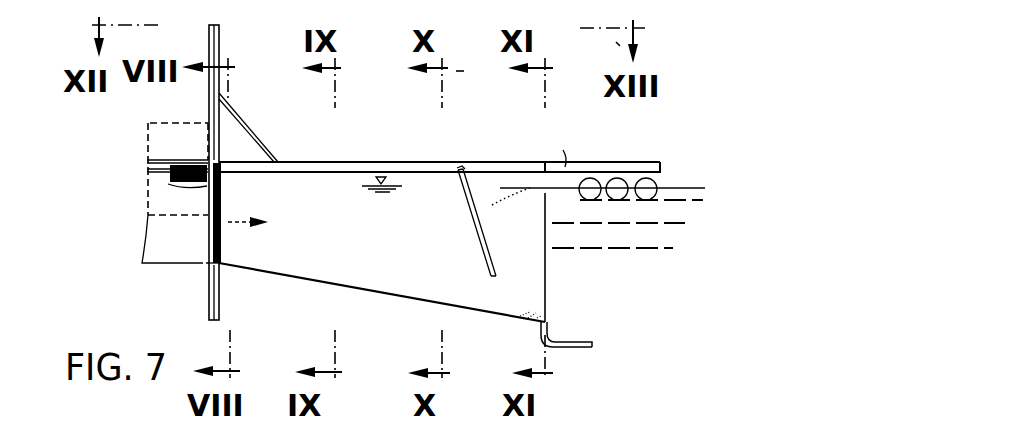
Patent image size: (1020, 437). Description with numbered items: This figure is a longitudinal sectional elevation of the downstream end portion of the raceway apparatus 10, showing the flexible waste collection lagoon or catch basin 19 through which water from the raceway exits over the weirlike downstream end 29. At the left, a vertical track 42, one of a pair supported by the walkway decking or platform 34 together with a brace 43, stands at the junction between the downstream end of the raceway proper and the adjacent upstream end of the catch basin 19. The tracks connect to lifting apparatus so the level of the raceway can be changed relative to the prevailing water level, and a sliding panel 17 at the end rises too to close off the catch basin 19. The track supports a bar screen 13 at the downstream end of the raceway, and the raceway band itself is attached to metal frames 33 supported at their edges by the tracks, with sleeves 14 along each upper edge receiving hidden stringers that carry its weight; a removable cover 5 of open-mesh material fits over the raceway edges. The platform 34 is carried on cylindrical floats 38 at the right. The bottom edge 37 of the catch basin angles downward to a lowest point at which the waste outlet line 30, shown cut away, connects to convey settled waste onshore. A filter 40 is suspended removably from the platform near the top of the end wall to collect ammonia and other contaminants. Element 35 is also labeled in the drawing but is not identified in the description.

The removable cover 5 is at (170, 160).
The raceway apparatus 10 is at (585, 127).
The bar screens 13 is at (222, 188).
The sleeves 14 is at (148, 178).
The sliding panels 17 is at (209, 277).
The waste collection lagoon or catch basin 19 is at (405, 150).
The weirlike downstream end 29 is at (545, 260).
The waste outlet line 30 is at (560, 340).
The metal frames 33 is at (200, 205).
The walkway decking or platform 34 is at (498, 165).
The pile 35 is at (178, 240).
The bottom edge 37 is at (390, 292).
The cylindrical floats 38 is at (608, 193).
The filter 40 is at (483, 260).
The vertical tracks 42 is at (217, 40).
The braces 43 is at (244, 116).